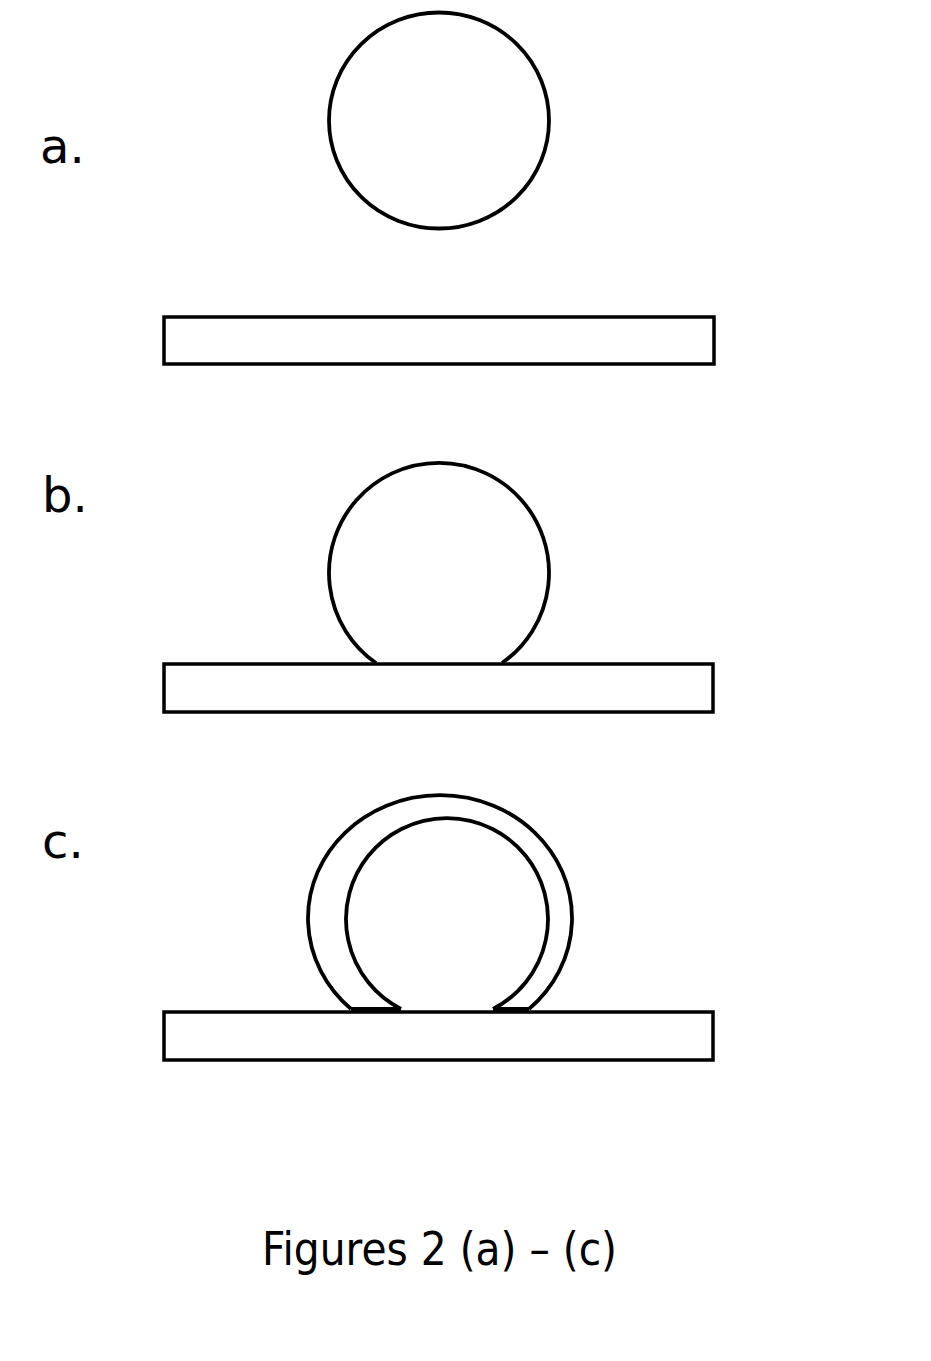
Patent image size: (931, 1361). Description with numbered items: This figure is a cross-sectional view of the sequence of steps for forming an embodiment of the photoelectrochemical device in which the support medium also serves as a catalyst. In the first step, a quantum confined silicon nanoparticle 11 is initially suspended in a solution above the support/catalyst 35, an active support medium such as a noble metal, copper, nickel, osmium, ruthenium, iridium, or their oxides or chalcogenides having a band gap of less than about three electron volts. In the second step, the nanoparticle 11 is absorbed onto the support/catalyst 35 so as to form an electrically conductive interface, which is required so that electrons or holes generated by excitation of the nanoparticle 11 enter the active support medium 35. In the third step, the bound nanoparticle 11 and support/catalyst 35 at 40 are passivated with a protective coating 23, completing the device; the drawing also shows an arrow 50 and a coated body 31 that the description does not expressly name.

The quantum confined silicon particle 11 is at (439, 338).
The support/catalyst 35 is at (698, 343).
The bound nanoparticle and support/catalyst 40 is at (292, 525).
The deposition of coating 50 is at (293, 857).
The protective coating 23 is at (530, 842).
The coated ball 31 is at (447, 913).